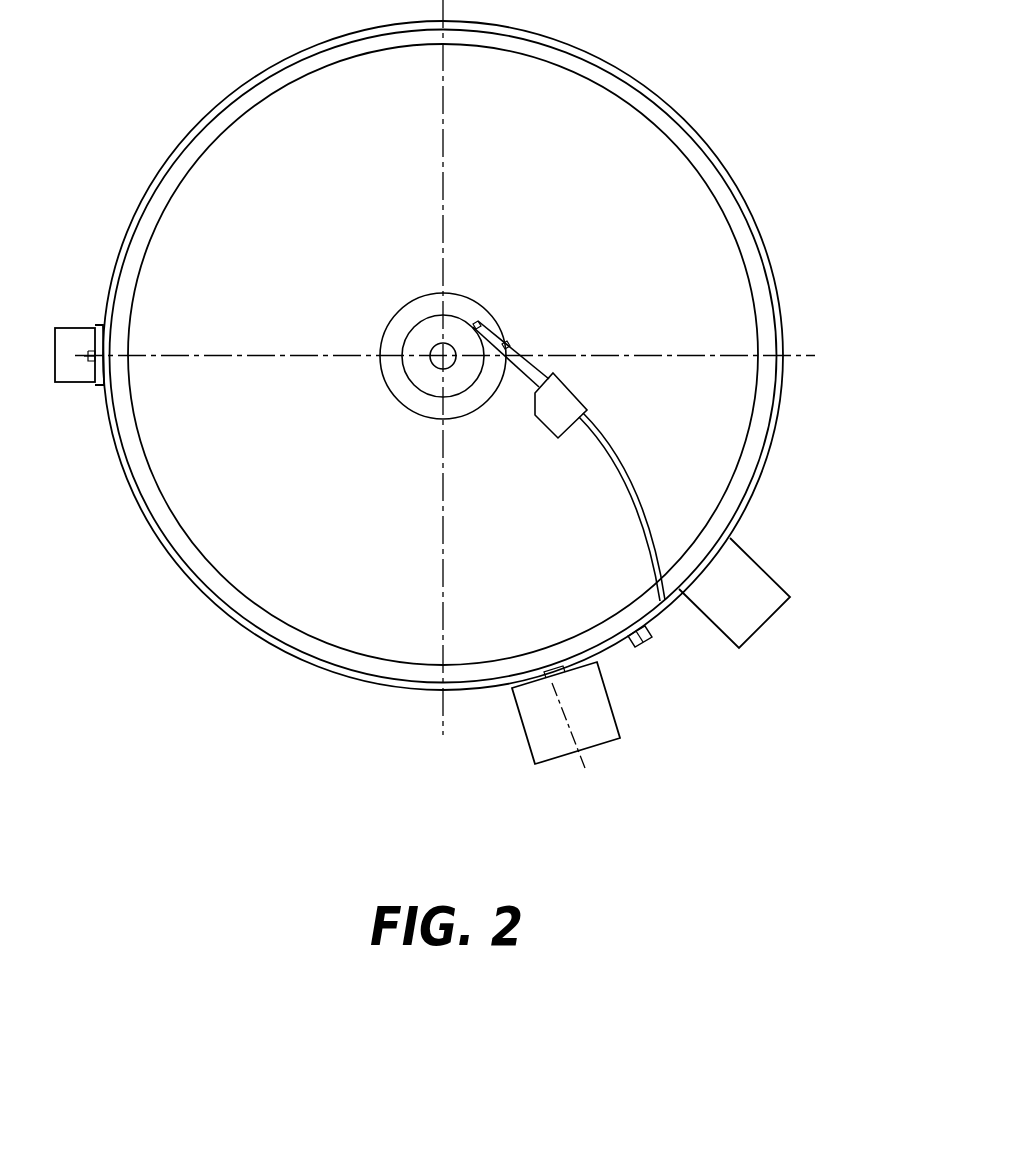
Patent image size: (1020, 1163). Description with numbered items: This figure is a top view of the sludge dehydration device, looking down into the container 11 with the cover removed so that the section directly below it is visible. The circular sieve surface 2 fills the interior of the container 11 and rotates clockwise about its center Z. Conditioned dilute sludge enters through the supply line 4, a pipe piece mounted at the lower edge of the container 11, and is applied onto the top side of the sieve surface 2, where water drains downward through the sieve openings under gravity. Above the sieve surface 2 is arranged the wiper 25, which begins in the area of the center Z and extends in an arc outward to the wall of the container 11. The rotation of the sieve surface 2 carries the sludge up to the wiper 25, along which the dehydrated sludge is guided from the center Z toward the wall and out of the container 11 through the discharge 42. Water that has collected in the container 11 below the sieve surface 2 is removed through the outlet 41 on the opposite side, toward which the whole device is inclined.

The sieve surface 2 is at (628, 165).
The container 11 is at (753, 258).
The wiper 25 is at (610, 449).
The supply line 4 is at (598, 723).
The outlet 41 is at (73, 335).
The discharge 42 is at (753, 583).
The center Z is at (437, 345).